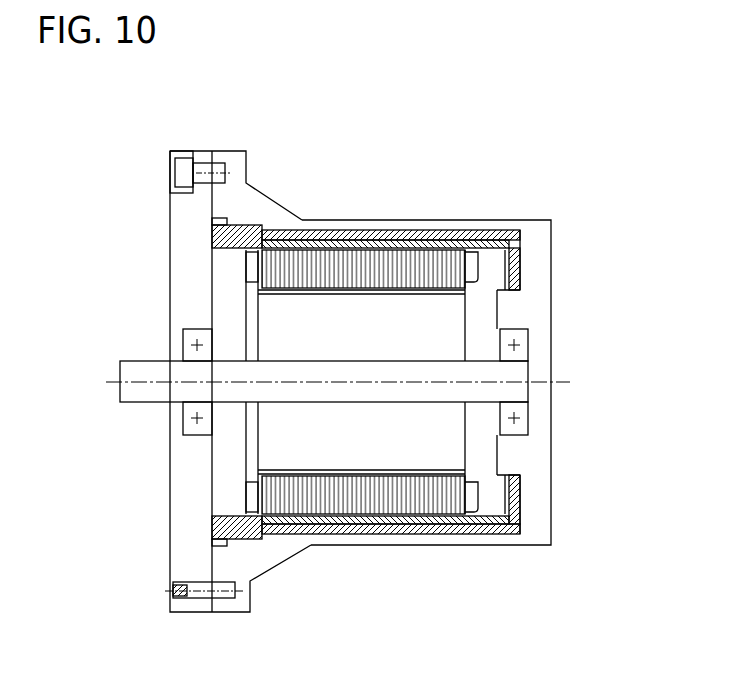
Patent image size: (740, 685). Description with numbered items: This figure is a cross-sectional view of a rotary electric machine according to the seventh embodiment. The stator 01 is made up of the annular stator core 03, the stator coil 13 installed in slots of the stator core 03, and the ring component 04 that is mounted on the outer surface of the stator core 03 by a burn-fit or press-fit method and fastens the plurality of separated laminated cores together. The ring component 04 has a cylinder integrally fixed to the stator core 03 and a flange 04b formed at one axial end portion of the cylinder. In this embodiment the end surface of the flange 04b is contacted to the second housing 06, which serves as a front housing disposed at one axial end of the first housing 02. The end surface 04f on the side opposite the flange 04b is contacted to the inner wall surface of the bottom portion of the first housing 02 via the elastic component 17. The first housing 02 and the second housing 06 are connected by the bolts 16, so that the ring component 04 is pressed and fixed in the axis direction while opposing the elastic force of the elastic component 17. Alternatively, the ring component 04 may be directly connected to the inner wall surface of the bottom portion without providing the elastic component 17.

The stator 01 is at (383, 299).
The first housing 02 is at (528, 305).
The stator core 03 is at (328, 268).
The ring component 04 is at (300, 240).
The flange 04b is at (212, 238).
The end surface 04f is at (516, 528).
The second housing 06 is at (188, 214).
The stator coil 13 is at (266, 230).
The bolt 16 is at (173, 166).
The elastic component 17 is at (518, 247).